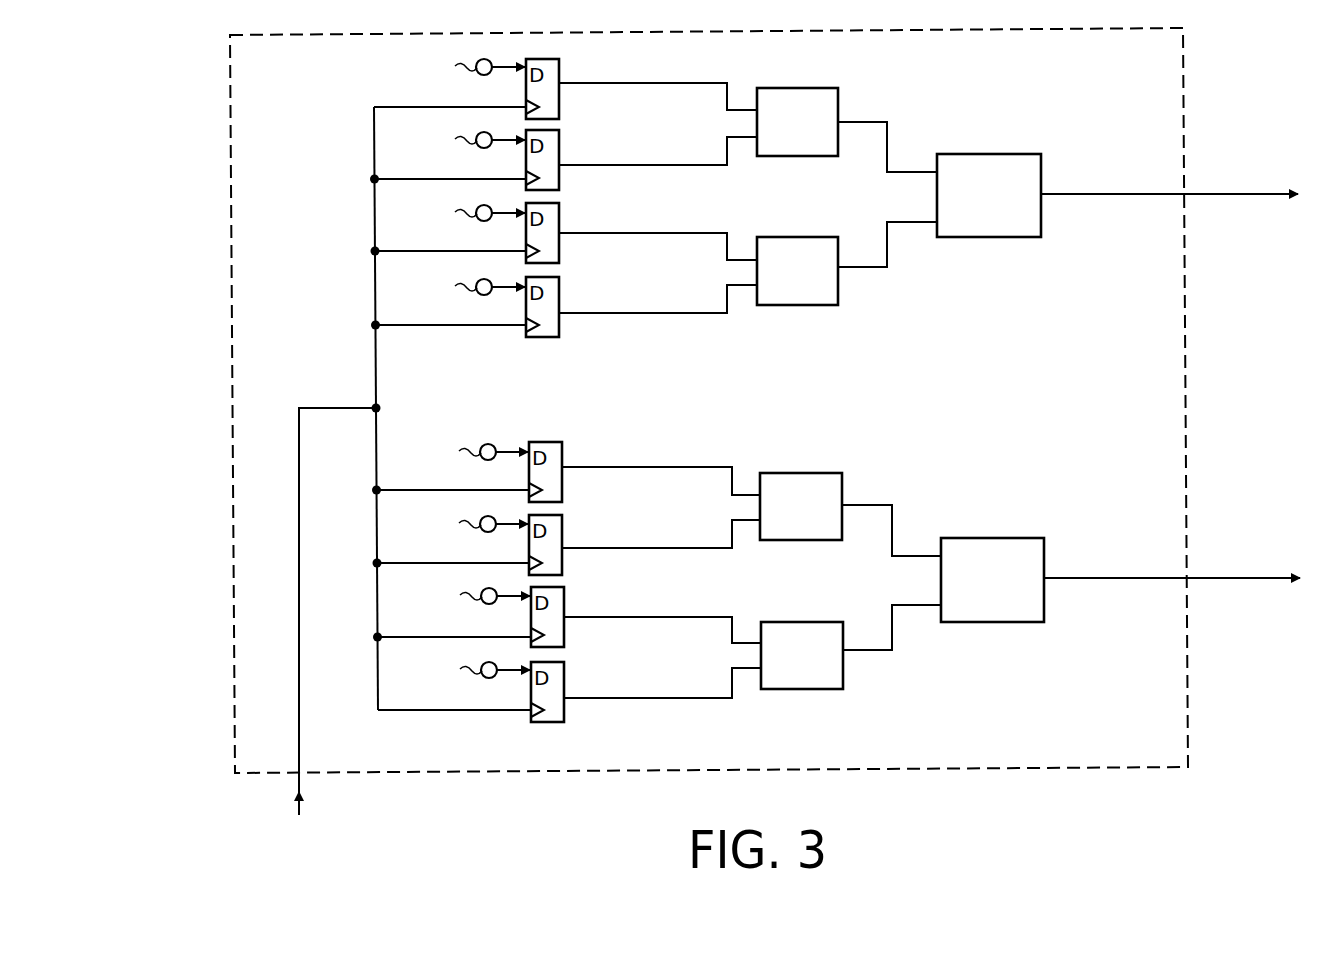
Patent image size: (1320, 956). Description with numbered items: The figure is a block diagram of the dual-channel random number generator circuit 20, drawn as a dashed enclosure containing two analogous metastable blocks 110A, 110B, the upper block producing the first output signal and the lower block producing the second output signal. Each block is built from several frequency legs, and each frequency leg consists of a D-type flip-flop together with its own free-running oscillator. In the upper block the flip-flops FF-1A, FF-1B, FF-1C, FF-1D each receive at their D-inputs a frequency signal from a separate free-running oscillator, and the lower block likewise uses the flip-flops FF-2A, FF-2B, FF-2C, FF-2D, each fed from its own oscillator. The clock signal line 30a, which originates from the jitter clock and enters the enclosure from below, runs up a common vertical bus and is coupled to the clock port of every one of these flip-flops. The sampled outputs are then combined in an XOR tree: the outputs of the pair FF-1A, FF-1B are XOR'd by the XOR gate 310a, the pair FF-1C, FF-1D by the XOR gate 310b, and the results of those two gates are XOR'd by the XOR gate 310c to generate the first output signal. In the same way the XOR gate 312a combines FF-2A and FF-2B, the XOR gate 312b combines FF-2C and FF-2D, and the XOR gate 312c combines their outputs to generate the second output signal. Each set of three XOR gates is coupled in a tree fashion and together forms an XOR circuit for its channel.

The dual-channel random number generator circuit 20 is at (212, 140).
The clock signal line 30a is at (302, 742).
The metastable block 110A is at (325, 210).
The metastable block 110B is at (960, 470).
The XOR gate 310a is at (797, 122).
The XOR gate 310b is at (797, 271).
The XOR gate 310c is at (989, 196).
The XOR gate 312a is at (801, 507).
The XOR gate 312b is at (802, 656).
The XOR gate 312c is at (992, 581).
The D-type flip-flop FF-1A is at (562, 62).
The D-type flip-flop FF-1B is at (562, 133).
The D-type flip-flop FF-1C is at (562, 206).
The D-type flip-flop FF-1D is at (562, 280).
The D-type flip-flop FF-2A is at (565, 446).
The D-type flip-flop FF-2B is at (565, 518).
The D-type flip-flop FF-2C is at (567, 590).
The D-type flip-flop FF-2D is at (567, 664).